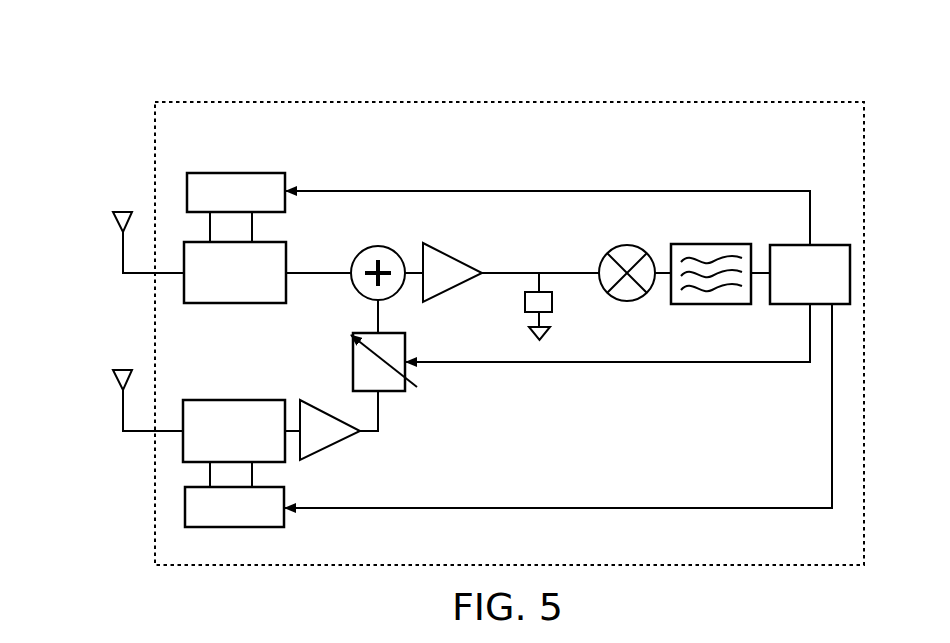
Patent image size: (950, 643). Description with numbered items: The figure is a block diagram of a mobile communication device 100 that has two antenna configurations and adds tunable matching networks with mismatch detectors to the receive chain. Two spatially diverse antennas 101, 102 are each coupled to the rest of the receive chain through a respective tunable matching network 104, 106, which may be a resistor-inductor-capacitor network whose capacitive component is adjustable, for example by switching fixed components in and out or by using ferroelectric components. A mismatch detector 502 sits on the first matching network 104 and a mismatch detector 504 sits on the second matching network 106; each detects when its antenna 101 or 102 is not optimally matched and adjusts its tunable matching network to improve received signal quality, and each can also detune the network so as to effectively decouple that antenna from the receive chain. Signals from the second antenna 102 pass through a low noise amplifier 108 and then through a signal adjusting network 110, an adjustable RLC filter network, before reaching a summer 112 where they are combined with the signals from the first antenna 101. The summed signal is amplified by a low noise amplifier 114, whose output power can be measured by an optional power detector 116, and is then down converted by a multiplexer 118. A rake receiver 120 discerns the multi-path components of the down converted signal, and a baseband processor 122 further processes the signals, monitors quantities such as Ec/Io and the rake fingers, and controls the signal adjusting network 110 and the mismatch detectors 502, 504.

The mobile communication device 100 is at (574, 78).
The antenna 101 is at (121, 211).
The antenna 102 is at (121, 369).
The tunable matching network 104 is at (270, 242).
The tunable matching network 106 is at (235, 400).
The low noise amplifier 108 is at (332, 448).
The signal adjusting network 110 is at (398, 391).
The summer 112 is at (384, 245).
The low noise amplifier 114 is at (438, 299).
The power detector 116 is at (553, 306).
The multiplexer 118 is at (626, 303).
The rake receiver 120 is at (676, 244).
The baseband processor 122 is at (820, 245).
The mismatch detector 502 is at (276, 172).
The mismatch detector 504 is at (256, 527).